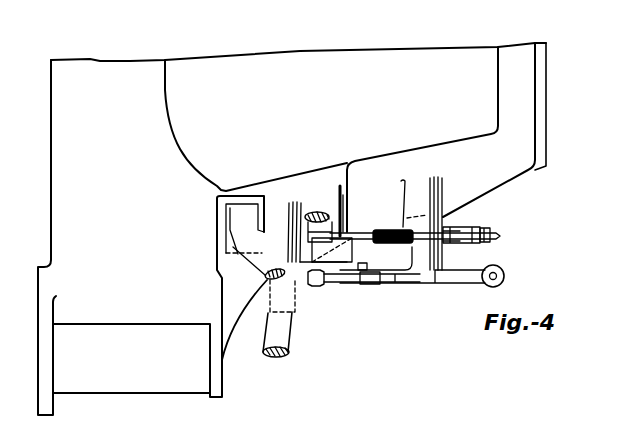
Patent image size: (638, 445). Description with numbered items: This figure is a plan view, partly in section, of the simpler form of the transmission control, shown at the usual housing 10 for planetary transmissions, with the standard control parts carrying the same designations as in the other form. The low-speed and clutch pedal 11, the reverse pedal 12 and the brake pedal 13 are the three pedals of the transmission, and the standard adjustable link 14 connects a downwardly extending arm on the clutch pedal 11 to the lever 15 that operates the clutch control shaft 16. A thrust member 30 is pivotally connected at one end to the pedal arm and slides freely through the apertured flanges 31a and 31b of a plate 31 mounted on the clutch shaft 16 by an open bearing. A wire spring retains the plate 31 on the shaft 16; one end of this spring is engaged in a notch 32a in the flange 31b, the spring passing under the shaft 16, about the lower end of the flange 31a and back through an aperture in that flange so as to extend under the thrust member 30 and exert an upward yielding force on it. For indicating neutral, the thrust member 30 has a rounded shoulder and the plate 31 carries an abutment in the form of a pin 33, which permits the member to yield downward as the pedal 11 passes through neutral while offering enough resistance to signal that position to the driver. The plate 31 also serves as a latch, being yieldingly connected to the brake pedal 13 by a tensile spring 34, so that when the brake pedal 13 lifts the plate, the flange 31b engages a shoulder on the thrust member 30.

The housing 10 is at (122, 386).
The low-speed and clutch pedal 11 is at (285, 338).
The reverse pedal 12 is at (263, 272).
The brake pedal 13 is at (318, 211).
The adjustable link 14 is at (312, 285).
The lever 15 is at (458, 278).
The clutch control shaft 16 is at (440, 228).
The thrust member 30 is at (354, 243).
The plate 31 is at (433, 240).
The apertured flange 31a is at (375, 243).
The apertured flange 31b is at (483, 232).
The notch 32a is at (446, 233).
The pin 33 is at (457, 243).
The tensile spring 34 is at (382, 228).